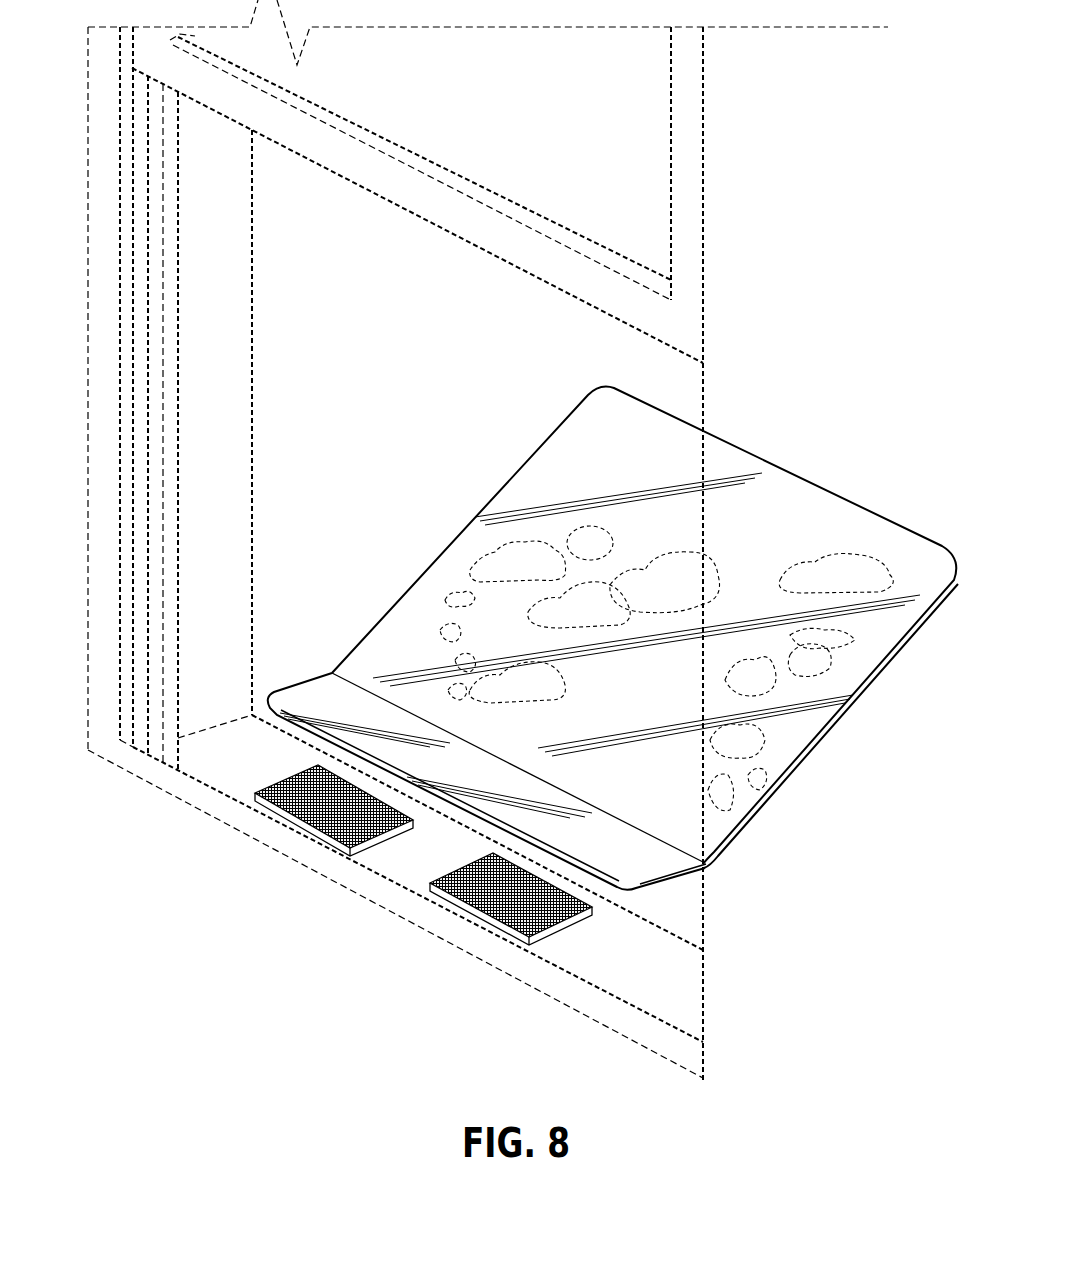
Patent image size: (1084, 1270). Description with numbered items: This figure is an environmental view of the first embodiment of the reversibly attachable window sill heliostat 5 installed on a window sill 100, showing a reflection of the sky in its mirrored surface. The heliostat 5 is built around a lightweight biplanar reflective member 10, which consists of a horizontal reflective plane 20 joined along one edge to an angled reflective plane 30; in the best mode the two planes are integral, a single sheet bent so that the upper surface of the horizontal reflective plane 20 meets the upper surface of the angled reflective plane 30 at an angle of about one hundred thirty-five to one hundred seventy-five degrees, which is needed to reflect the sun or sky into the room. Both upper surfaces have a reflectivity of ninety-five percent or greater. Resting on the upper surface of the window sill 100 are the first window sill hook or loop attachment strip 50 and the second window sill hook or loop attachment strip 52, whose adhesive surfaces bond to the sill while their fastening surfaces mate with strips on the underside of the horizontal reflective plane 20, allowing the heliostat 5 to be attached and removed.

The reversibly attachable window sill heliostat 5 is at (613, 587).
The lightweight biplanar reflective member 10 is at (613, 638).
The horizontal reflective plane 20 is at (305, 686).
The angled reflective plane 30 is at (463, 526).
The first window sill hook or loop attachment strip 50 is at (304, 811).
The second window sill hook or loop attachment strip 52 is at (480, 908).
The window sill 100 is at (687, 998).